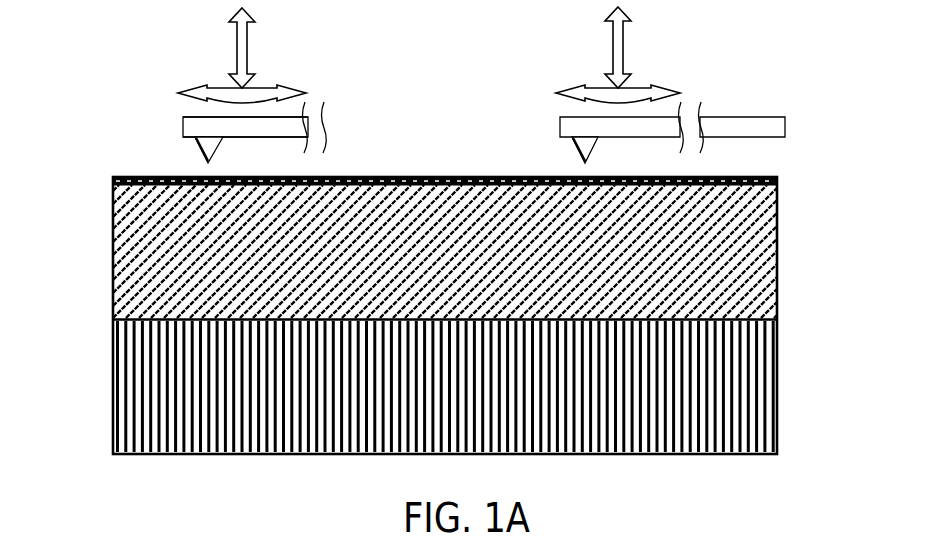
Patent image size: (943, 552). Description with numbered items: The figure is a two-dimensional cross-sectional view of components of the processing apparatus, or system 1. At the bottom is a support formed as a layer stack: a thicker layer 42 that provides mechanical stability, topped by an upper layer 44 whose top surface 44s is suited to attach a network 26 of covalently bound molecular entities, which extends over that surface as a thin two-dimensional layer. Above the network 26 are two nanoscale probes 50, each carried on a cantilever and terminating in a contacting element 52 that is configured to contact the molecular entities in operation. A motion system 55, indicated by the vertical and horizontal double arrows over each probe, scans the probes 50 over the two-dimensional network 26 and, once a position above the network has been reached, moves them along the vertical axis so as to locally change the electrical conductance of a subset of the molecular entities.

The system 1 is at (439, 350).
The network 26 is at (770, 187).
The thicker layer 42 is at (112, 363).
The upper layer 44 is at (110, 240).
The surface 44s is at (283, 198).
The nanoscale probe 50 is at (182, 124).
The contacting element 52 is at (195, 141).
The motion system 55 is at (263, 71).